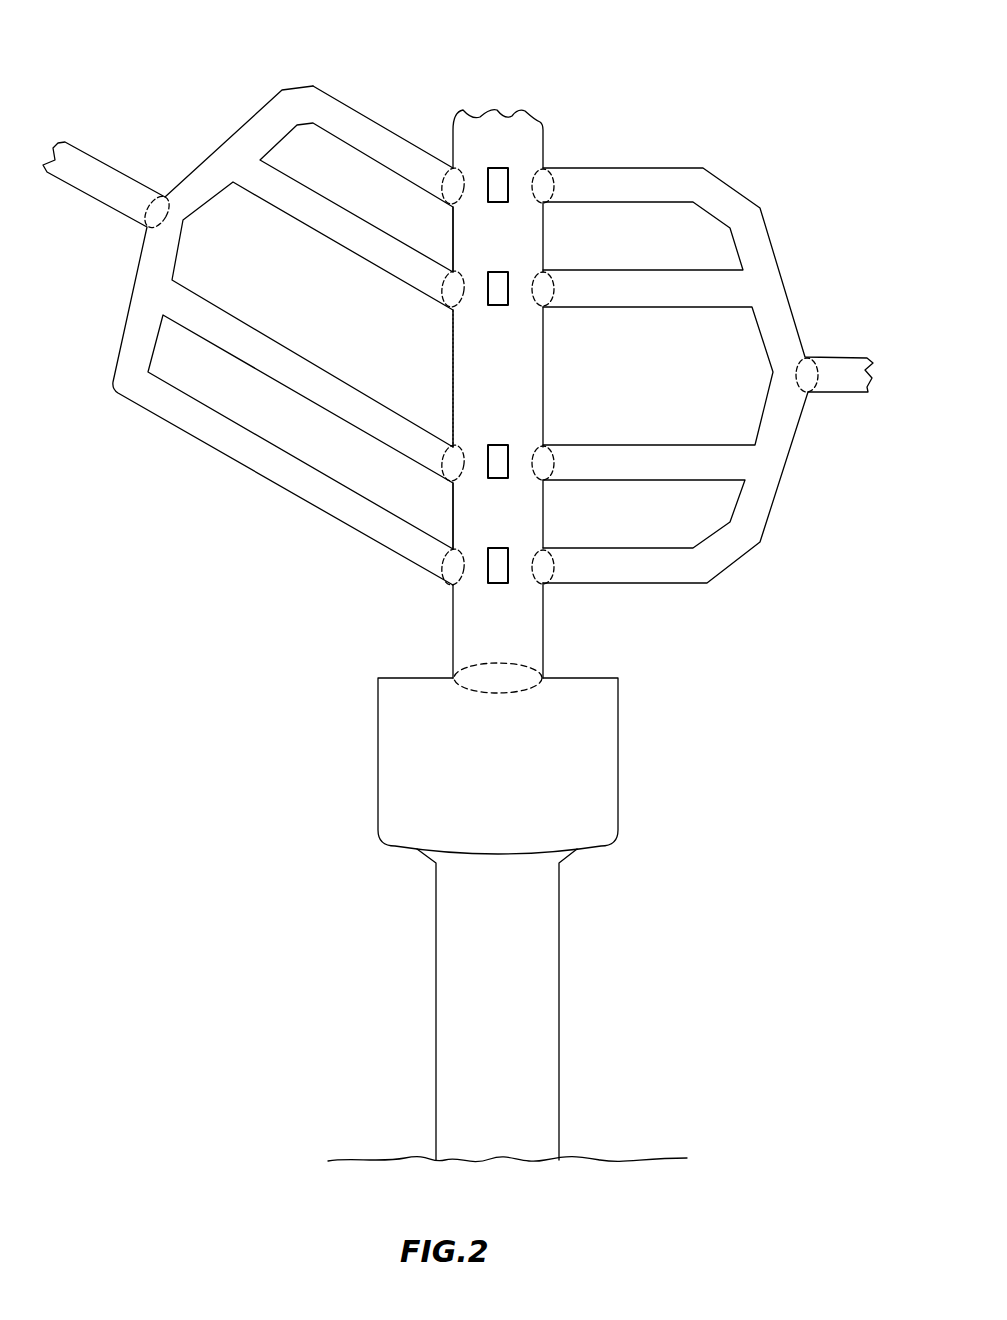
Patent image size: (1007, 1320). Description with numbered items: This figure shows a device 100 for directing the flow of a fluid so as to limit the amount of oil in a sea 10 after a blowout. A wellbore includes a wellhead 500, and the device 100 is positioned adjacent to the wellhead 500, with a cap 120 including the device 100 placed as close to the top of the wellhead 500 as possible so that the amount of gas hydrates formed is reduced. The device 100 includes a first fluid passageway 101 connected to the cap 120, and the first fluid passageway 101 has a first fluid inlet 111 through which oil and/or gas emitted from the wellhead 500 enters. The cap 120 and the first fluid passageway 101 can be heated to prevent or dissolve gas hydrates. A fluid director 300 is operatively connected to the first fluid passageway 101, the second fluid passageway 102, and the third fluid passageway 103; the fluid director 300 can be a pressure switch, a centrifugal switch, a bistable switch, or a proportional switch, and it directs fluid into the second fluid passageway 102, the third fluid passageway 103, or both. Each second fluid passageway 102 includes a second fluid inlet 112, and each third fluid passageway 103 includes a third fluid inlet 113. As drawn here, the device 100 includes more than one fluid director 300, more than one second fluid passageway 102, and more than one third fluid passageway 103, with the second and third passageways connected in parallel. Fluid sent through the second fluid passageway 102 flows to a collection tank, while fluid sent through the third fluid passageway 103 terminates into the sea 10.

The sea 10 is at (118, 70).
The device 100 is at (672, 690).
The first fluid passageway 101 is at (452, 616).
The second fluid passageway 102 is at (348, 105).
The third fluid passageway 103 is at (645, 168).
The first fluid inlet 111 is at (513, 670).
The second fluid inlet 112 is at (448, 188).
The third fluid inlet 113 is at (547, 198).
The cap 120 is at (619, 745).
The fluid director 300 is at (500, 166).
The wellhead 500 is at (543, 1010).